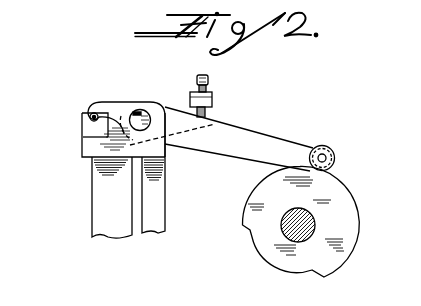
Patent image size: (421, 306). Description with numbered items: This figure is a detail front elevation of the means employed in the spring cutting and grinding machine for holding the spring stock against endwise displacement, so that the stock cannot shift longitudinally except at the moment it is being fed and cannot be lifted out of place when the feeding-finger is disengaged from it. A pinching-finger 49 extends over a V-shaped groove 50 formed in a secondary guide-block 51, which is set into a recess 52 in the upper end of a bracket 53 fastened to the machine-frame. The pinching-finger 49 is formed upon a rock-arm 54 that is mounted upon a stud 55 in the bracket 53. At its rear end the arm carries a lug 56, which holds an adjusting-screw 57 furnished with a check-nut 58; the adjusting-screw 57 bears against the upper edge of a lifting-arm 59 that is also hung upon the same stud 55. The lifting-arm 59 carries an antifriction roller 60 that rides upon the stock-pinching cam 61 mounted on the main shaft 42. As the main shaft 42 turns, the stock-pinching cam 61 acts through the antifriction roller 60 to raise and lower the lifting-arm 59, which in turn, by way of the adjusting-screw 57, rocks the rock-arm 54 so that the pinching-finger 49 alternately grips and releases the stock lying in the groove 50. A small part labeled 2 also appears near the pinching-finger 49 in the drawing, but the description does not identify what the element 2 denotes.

The pivot bolt 2 is at (88, 113).
The shaft hub 42 is at (296, 226).
The hook arm 49 is at (98, 102).
The clamp block 50 is at (85, 119).
The bracket side 51 is at (97, 128).
The bracket base plate 52 is at (97, 140).
The pedestal support 53 is at (128, 197).
The lever head 54 is at (173, 104).
The pivot hole 55 is at (138, 112).
The adjusting screw block 56 is at (213, 103).
The lock nut 57 is at (208, 88).
The screw neck 58 is at (213, 93).
The lever arm 59 is at (239, 139).
The roller 60 is at (330, 147).
The cam disk 61 is at (341, 200).